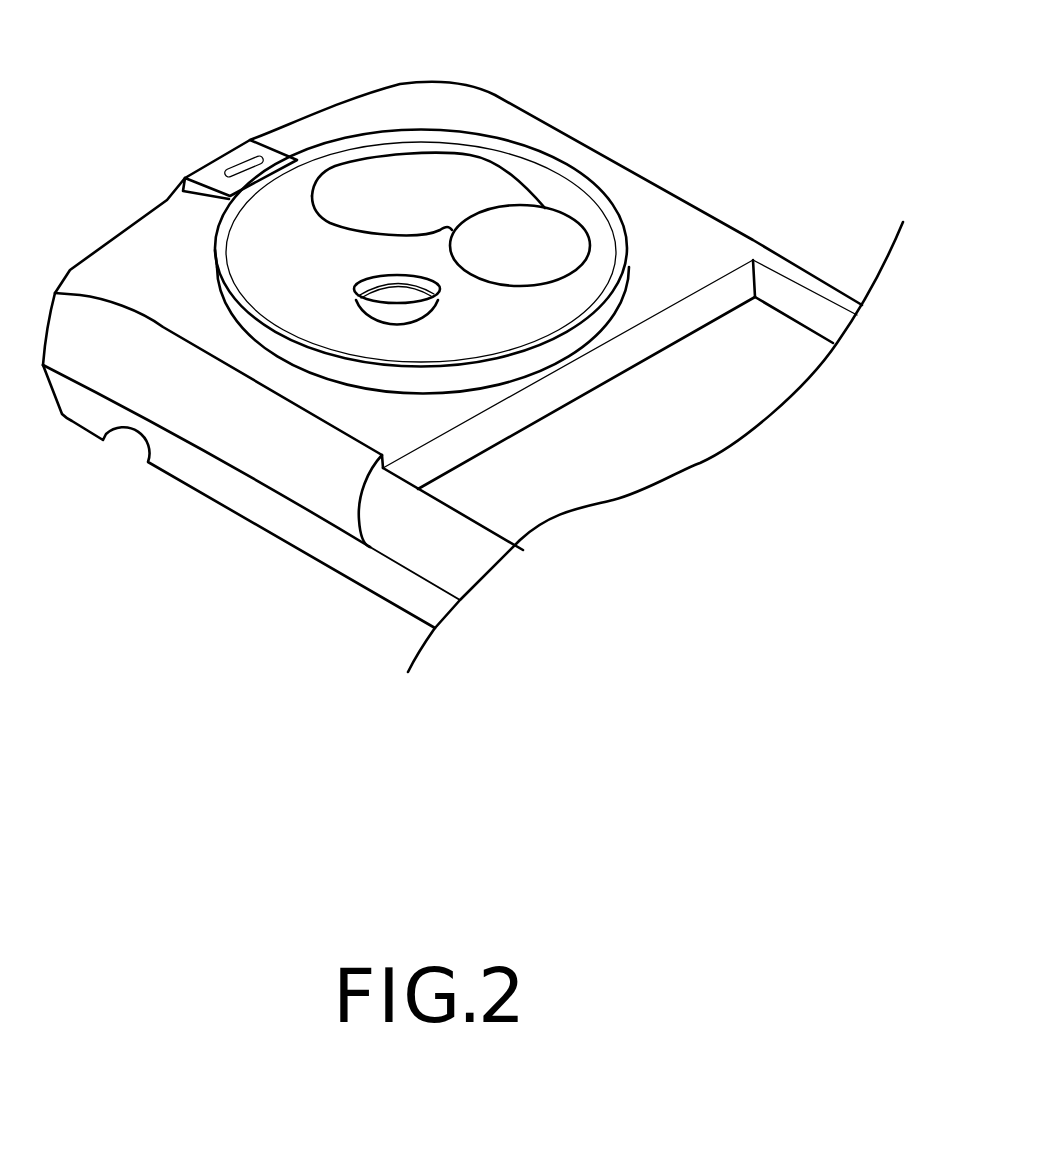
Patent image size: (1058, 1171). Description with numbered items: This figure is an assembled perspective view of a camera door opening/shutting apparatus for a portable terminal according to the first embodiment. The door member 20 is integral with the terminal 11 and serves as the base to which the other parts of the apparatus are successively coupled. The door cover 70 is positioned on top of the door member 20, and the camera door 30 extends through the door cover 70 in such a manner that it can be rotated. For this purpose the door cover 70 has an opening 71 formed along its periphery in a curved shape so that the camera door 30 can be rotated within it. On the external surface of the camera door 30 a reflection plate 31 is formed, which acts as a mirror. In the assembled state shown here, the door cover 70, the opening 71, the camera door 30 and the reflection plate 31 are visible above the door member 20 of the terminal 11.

The terminal 11 is at (236, 525).
The door member 20 is at (613, 196).
The camera door 30 is at (540, 207).
The reflection plate 31 is at (562, 245).
The door cover 70 is at (317, 150).
The opening 71 is at (453, 173).